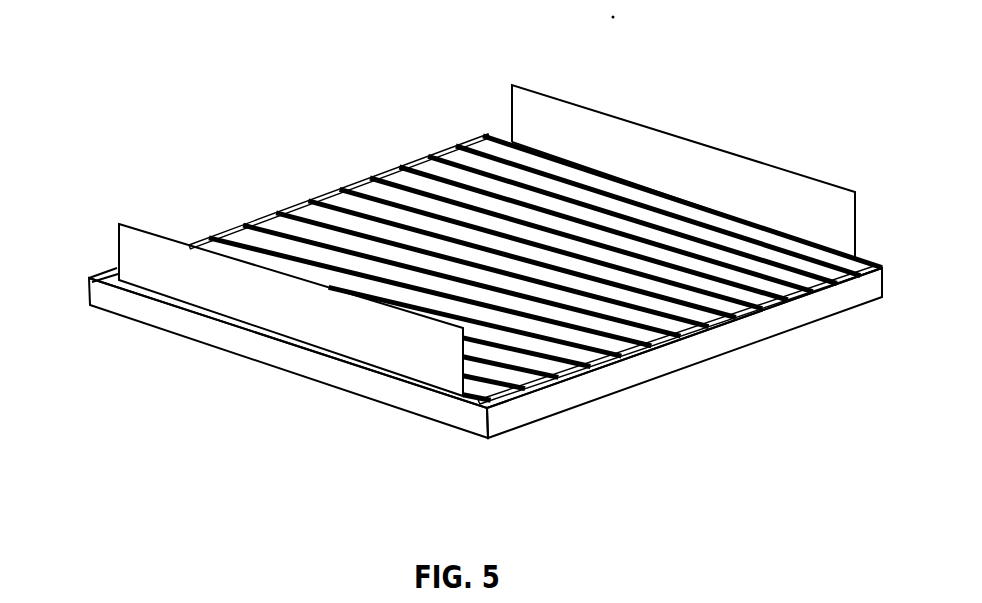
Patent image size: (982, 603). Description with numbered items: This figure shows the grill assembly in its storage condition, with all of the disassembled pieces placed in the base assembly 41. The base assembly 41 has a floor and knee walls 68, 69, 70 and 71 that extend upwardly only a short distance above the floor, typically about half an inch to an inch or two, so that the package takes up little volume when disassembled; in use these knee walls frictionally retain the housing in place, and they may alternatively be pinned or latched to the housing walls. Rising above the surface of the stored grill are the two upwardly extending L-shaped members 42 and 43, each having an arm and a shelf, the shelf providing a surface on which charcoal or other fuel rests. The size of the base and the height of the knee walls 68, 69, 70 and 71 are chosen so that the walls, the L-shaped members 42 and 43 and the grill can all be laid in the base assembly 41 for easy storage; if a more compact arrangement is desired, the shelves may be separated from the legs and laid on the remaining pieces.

The base assembly 41 is at (537, 420).
The upwardly extending L-shaped member 42 is at (118, 225).
The upwardly extending L-shaped member 43 is at (512, 85).
The knee wall 68 is at (722, 343).
The knee wall 69 is at (273, 357).
The knee wall 70 is at (303, 200).
The knee wall 71 is at (882, 268).